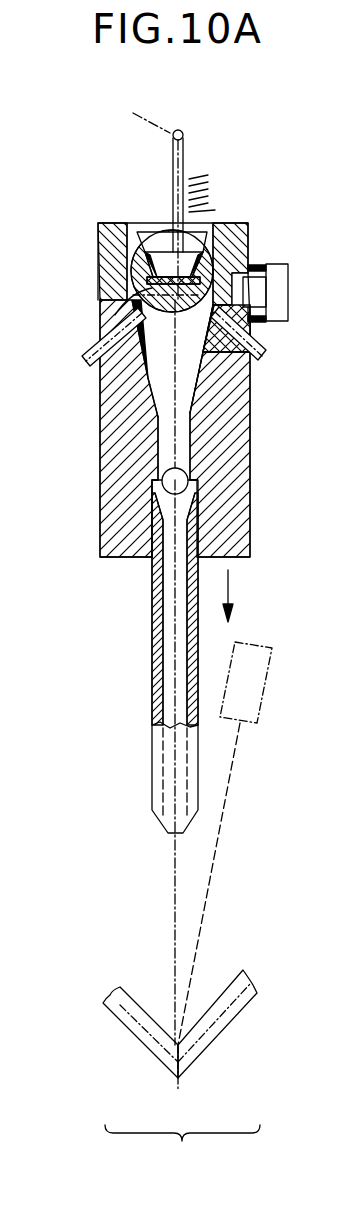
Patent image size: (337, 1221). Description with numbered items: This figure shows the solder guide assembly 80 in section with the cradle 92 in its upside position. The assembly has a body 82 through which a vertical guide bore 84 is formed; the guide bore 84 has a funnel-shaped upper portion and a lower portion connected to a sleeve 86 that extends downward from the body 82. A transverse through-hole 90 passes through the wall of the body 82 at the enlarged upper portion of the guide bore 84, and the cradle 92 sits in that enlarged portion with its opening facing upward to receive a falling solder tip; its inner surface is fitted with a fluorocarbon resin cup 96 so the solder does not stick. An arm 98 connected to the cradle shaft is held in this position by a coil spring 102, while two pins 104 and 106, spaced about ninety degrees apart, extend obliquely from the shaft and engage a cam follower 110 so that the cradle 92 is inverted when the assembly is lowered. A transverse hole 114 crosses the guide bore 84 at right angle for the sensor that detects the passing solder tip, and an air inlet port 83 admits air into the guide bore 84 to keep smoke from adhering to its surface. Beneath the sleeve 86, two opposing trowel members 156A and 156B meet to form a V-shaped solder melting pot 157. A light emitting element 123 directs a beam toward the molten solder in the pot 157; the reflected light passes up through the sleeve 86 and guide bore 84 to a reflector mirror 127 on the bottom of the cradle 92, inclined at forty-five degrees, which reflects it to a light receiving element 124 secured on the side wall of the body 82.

The solder guide assembly 80 is at (232, 220).
The body 82 is at (108, 480).
The air inlet port 83 is at (112, 388).
The guide bore 84 is at (197, 371).
The sleeve 86 is at (151, 660).
The transverse through-hole 90 is at (155, 238).
The cradle 92 is at (177, 255).
The cup 96 is at (135, 275).
The arm 98 is at (168, 133).
The coil spring 102 is at (213, 200).
The pin 104 is at (262, 357).
The pin 106 is at (95, 356).
The cam follower 110 is at (242, 413).
The transverse hole 114 is at (192, 460).
The light emitting element 123 is at (262, 705).
The light receiving element 124 is at (279, 263).
The reflector mirror 127 is at (126, 324).
The trowel member 156A is at (118, 1022).
The trowel member 156B is at (223, 1027).
The solder melting pot 157 is at (182, 1152).